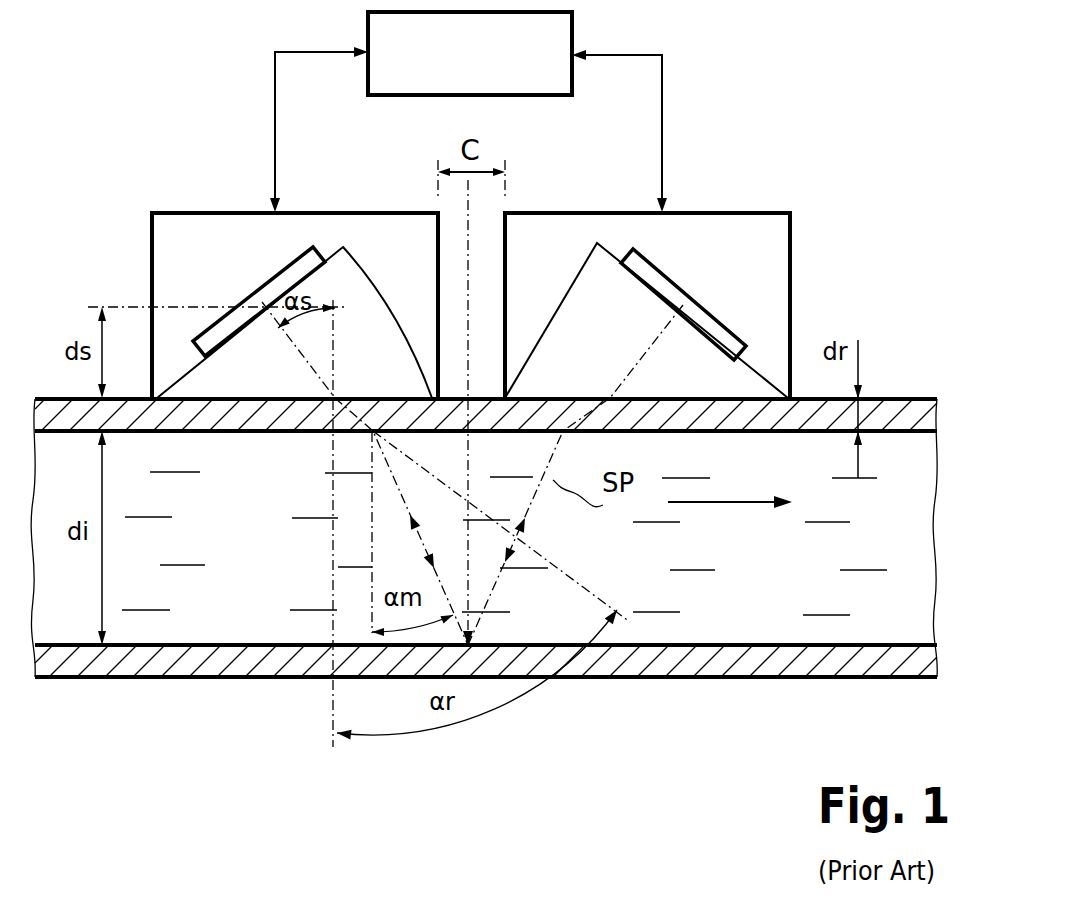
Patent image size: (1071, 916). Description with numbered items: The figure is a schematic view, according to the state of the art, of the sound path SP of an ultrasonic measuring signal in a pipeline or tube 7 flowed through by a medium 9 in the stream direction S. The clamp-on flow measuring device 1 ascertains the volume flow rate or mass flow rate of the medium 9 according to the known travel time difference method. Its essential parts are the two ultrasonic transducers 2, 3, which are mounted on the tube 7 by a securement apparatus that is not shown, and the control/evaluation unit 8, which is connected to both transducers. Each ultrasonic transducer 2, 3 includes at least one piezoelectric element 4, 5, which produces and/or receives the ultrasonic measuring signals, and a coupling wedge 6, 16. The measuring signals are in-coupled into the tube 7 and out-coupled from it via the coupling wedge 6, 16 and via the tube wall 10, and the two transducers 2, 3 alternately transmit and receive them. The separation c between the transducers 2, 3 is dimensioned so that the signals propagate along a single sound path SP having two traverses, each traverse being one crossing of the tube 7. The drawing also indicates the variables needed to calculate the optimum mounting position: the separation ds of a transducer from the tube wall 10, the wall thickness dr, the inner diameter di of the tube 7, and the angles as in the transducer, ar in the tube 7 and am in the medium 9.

The clamp-on flow measuring device 1 is at (130, 182).
The ultrasonic transducer 2 is at (745, 236).
The ultrasonic transducer 3 is at (215, 245).
The piezoelectric element 4 is at (714, 312).
The piezoelectric element 5 is at (267, 282).
The coupling wedge 6 is at (566, 300).
The tube 7 is at (823, 680).
The control/evaluation unit 8 is at (457, 66).
The medium 9 is at (240, 598).
The tube wall 10 is at (90, 658).
The coupling wedge 16 is at (383, 283).